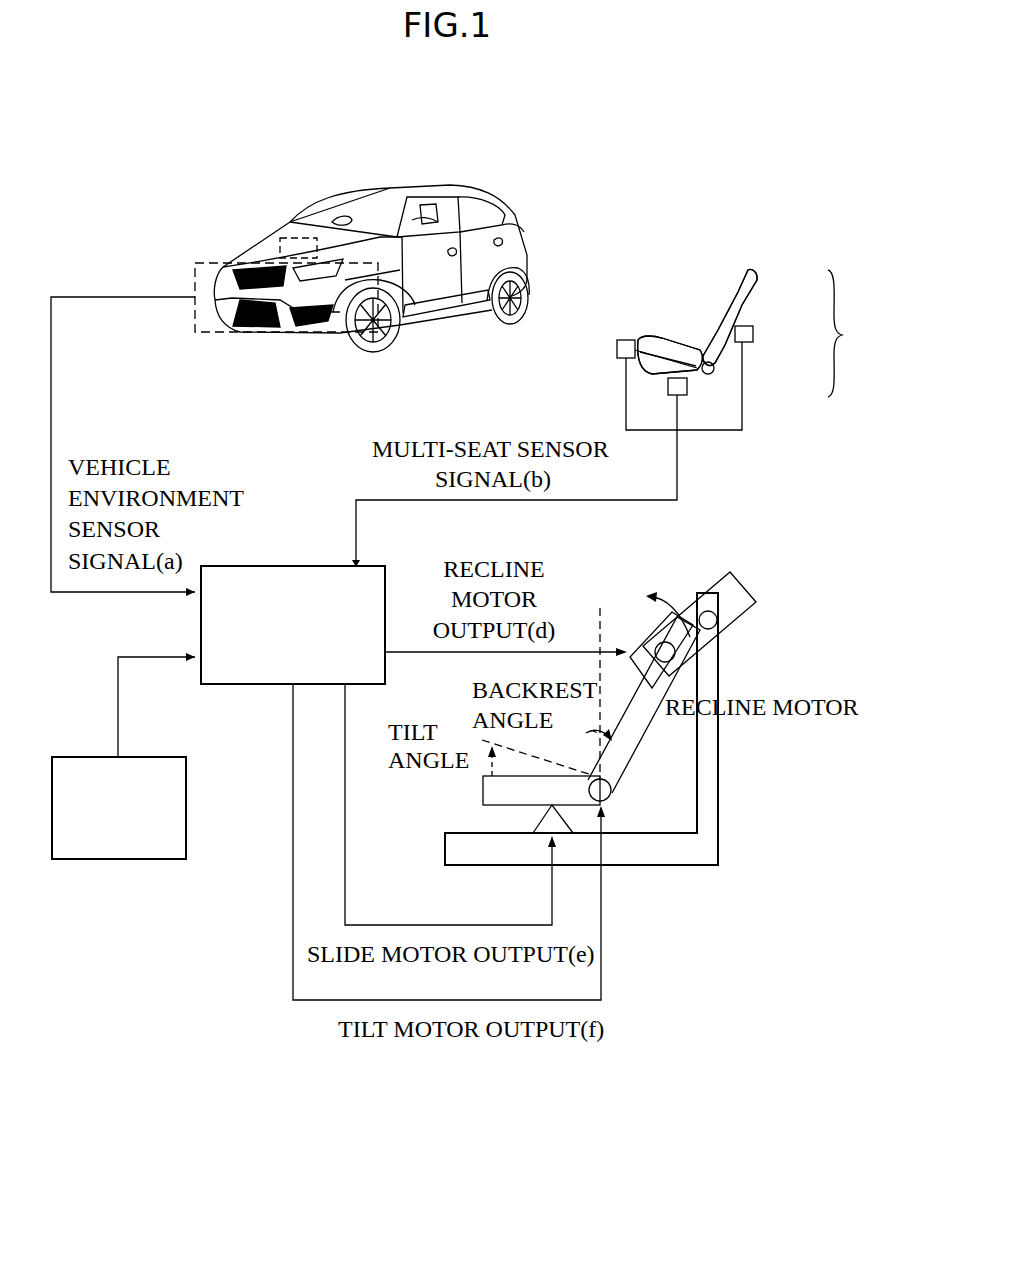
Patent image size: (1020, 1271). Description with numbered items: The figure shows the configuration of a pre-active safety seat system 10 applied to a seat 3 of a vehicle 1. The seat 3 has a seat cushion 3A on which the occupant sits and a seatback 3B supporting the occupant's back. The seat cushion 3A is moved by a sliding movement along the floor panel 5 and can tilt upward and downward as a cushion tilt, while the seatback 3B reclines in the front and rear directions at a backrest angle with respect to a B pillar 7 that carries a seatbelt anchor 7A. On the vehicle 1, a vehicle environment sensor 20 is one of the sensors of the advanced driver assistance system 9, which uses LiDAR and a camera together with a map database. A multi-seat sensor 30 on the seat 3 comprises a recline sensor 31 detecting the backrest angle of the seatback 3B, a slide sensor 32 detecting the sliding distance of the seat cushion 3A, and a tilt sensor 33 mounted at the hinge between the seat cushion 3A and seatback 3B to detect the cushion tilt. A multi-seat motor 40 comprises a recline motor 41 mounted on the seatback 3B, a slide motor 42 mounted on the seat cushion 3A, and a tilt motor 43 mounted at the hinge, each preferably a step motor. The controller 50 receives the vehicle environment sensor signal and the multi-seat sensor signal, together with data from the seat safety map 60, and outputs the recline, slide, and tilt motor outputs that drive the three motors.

The vehicle 1 is at (327, 200).
The seat 3 is at (428, 206).
The seat cushion 3A is at (648, 336).
The seatback 3B is at (728, 316).
The floor panel 5 is at (688, 853).
The B pillar 7 is at (708, 806).
The seatbelt anchor 7A is at (712, 616).
The advanced driver assistance system 9 is at (282, 250).
The pre-active safety seat system 10 is at (157, 1000).
The vehicle environment sensor 20 is at (213, 333).
The multi-seat sensor 30 is at (853, 333).
The recline sensor 31 is at (742, 328).
The slide sensor 32 is at (682, 387).
The tilt sensor 33 is at (697, 368).
The multi-seat motor 40 is at (761, 1047).
The recline motor 41 is at (656, 646).
The slide motor 42 is at (543, 827).
The tilt motor 43 is at (612, 800).
The controller 50 is at (299, 566).
The seat safety map 60 is at (123, 859).